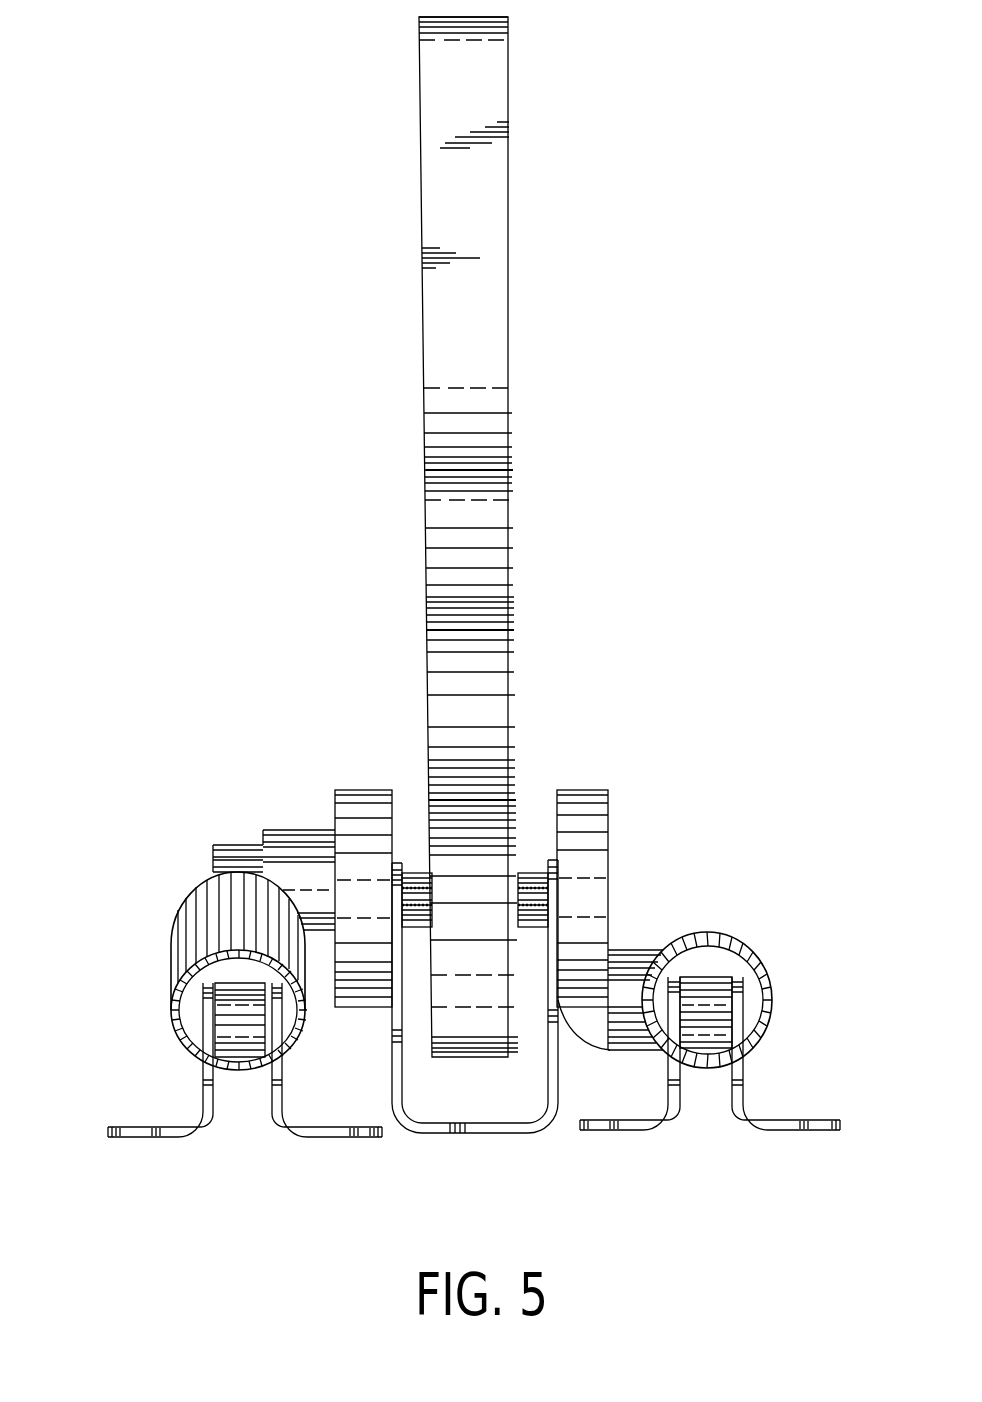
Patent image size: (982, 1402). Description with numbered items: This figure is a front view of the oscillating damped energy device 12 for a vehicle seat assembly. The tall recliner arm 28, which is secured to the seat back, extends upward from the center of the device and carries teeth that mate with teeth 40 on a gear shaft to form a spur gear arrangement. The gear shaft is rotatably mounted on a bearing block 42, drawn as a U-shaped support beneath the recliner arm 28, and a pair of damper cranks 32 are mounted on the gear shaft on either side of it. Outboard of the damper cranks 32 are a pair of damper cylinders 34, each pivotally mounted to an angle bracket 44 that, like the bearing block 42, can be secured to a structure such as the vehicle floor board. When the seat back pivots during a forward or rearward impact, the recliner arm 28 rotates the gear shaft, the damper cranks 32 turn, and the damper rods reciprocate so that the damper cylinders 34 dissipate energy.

The oscillating damped energy device 12 is at (604, 462).
The recliner arm 28 is at (424, 206).
The damper crank 32 is at (348, 790).
The damper cylinder 34 is at (178, 900).
The teeth 40 is at (530, 860).
The bearing block 42 is at (425, 858).
The angle bracket 44 is at (205, 1092).